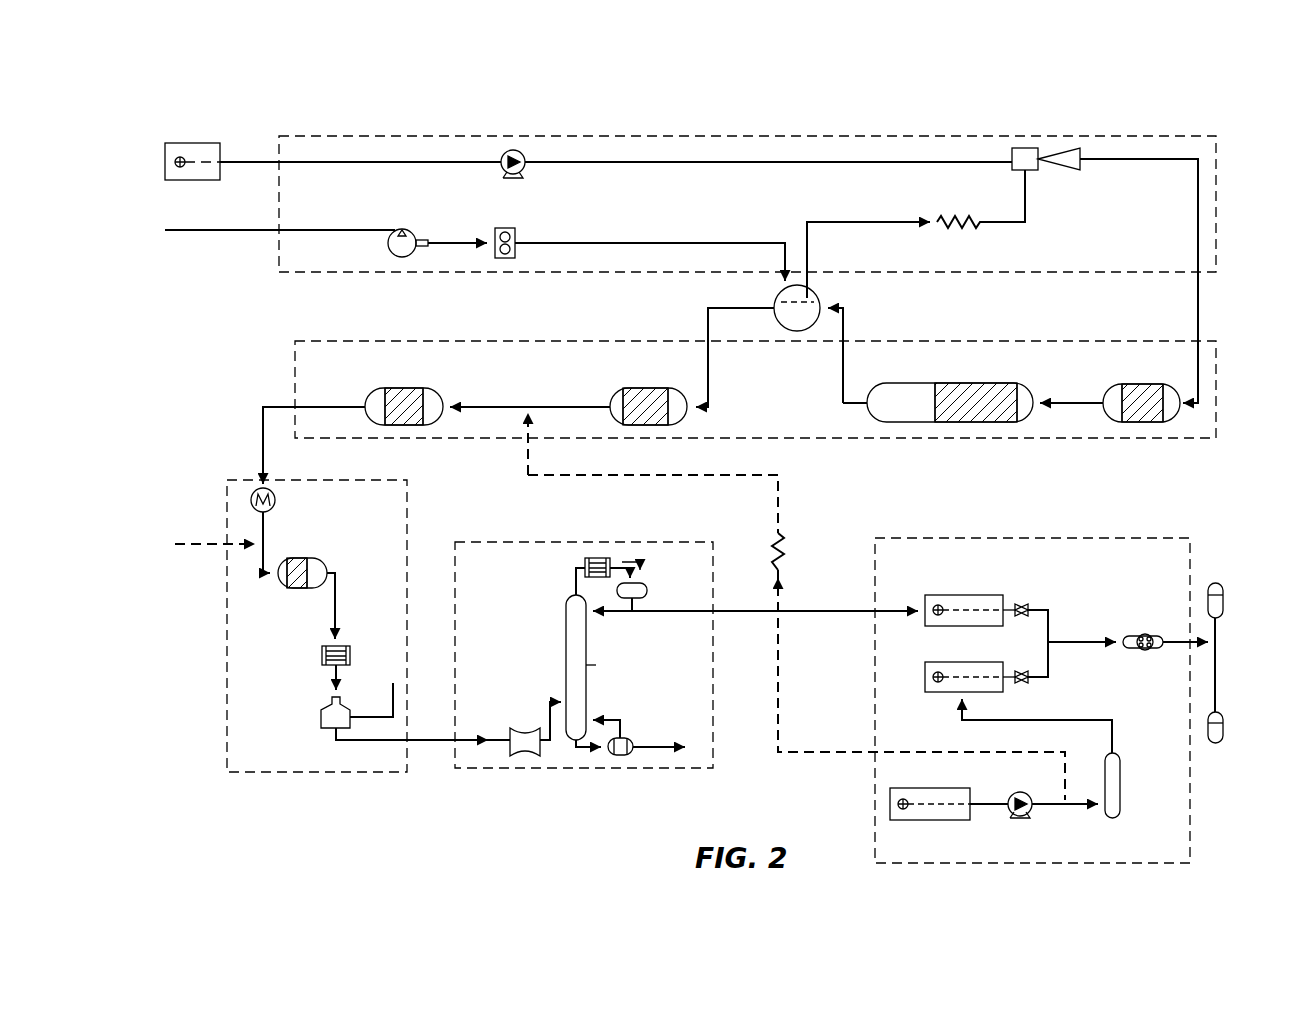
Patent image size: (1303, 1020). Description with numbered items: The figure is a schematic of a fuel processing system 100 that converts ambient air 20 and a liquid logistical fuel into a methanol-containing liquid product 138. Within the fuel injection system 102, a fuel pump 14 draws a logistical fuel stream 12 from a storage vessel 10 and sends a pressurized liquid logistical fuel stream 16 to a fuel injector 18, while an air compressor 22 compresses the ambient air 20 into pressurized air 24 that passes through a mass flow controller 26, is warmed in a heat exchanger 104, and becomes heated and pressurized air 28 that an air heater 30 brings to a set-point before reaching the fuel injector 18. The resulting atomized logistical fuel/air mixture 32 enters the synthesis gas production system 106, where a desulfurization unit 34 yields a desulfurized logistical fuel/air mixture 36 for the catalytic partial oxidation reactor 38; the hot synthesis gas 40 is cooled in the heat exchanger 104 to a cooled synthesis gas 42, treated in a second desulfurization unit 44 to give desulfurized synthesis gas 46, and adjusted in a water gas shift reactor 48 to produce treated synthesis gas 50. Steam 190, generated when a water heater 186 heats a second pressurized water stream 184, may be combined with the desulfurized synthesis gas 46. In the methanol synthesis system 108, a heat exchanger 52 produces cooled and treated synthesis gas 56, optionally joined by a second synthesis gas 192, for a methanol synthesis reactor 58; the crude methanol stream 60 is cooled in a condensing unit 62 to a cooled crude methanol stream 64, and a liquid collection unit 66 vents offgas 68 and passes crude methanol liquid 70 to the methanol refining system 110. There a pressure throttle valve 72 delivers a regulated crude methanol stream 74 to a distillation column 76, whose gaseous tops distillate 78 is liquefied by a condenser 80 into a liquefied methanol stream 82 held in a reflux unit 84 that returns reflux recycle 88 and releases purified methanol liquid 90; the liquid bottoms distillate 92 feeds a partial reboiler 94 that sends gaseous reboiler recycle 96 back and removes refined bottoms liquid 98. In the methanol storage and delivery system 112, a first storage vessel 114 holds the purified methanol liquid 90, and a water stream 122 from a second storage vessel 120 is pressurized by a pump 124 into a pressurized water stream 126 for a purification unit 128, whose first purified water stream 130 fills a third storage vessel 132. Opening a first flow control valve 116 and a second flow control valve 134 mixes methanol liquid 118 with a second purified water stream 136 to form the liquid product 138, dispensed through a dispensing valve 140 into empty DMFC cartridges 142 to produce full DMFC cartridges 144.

The storage vessel 10 is at (188, 143).
The logistical fuel stream 12 is at (315, 169).
The fuel pump 14 is at (513, 150).
The pressurized liquid logistical fuel stream 16 is at (672, 169).
The fuel injector 18 is at (1022, 148).
The ambient air 20 is at (313, 239).
The air compressor 22 is at (405, 229).
The pressurized air 24 is at (465, 250).
The mass flow controller 26 is at (513, 228).
The heated and pressurized air 28 is at (888, 231).
The air heater 30 is at (953, 212).
The logistical fuel/air mixture 32 is at (1160, 166).
The desulfurization unit 34 is at (1140, 384).
The desulfurized logistical fuel/air mixture 36 is at (1090, 396).
The catalytic partial oxidation reactor 38 is at (955, 383).
The synthesis gas 40 is at (836, 366).
The cooled synthesis gas 42 is at (760, 303).
The desulfurization unit 44 is at (648, 388).
The desulfurized synthesis gas 46 is at (562, 400).
The water gas shift reactor 48 is at (398, 388).
The treated synthesis gas 50 is at (355, 400).
The heat exchanger 52 is at (275, 501).
The cooled and treated synthesis gas 56 is at (272, 528).
The methanol synthesis reactor 58 is at (290, 588).
The crude methanol stream 60 is at (343, 590).
The condensing unit 62 is at (320, 654).
The cooled crude methanol stream 64 is at (343, 672).
The liquid collection unit 66 is at (320, 720).
The offgas 68 is at (380, 709).
The crude methanol liquid 70 is at (388, 746).
The pressure throttle valve 72 is at (522, 730).
The regulated crude methanol stream 74 is at (545, 708).
The distillation column 76 is at (566, 650).
The gaseous tops distillate 78 is at (568, 575).
The condenser 80 is at (584, 563).
The liquefied methanol stream 82 is at (642, 559).
The reflux unit 84 is at (646, 592).
The reflux recycle 88 is at (630, 618).
The purified methanol liquid 90 is at (728, 618).
The liquid bottoms distillate 92 is at (583, 757).
The partial reboiler 94 is at (637, 740).
The gaseous reboiler recycle 96 is at (630, 713).
The refined bottoms liquid 98 is at (648, 753).
The fuel processing system 100 is at (357, 808).
The fuel injection system 102 is at (707, 136).
The heat exchanger 104 is at (820, 298).
The synthesis gas production system 106 is at (355, 341).
The methanol synthesis system 108 is at (227, 495).
The methanol refining system 110 is at (548, 768).
The methanol storage and delivery system 112 is at (1190, 795).
The first storage vessel 114 is at (947, 595).
The first flow control valve 116 is at (1025, 603).
The methanol liquid 118 is at (1055, 608).
The second storage vessel 120 is at (948, 820).
The water stream 122 is at (995, 812).
The pump 124 is at (1017, 820).
The pressurized water stream 126 is at (1080, 812).
The purification unit 128 is at (1120, 788).
The first purified water stream 130 is at (1047, 713).
The third storage vessel 132 is at (948, 662).
The second flow control valve 134 is at (1030, 683).
The second purified water stream 136 is at (1055, 656).
The liquid product 138 is at (1098, 650).
The dispensing valve 140 is at (1143, 635).
The empty DMFC cartridges 142 is at (1225, 607).
The full DMFC cartridges 144 is at (1225, 733).
The second pressurized water stream 184 is at (787, 662).
The water heater 186 is at (780, 530).
The steam 190 is at (672, 485).
The second synthesis gas 192 is at (202, 552).